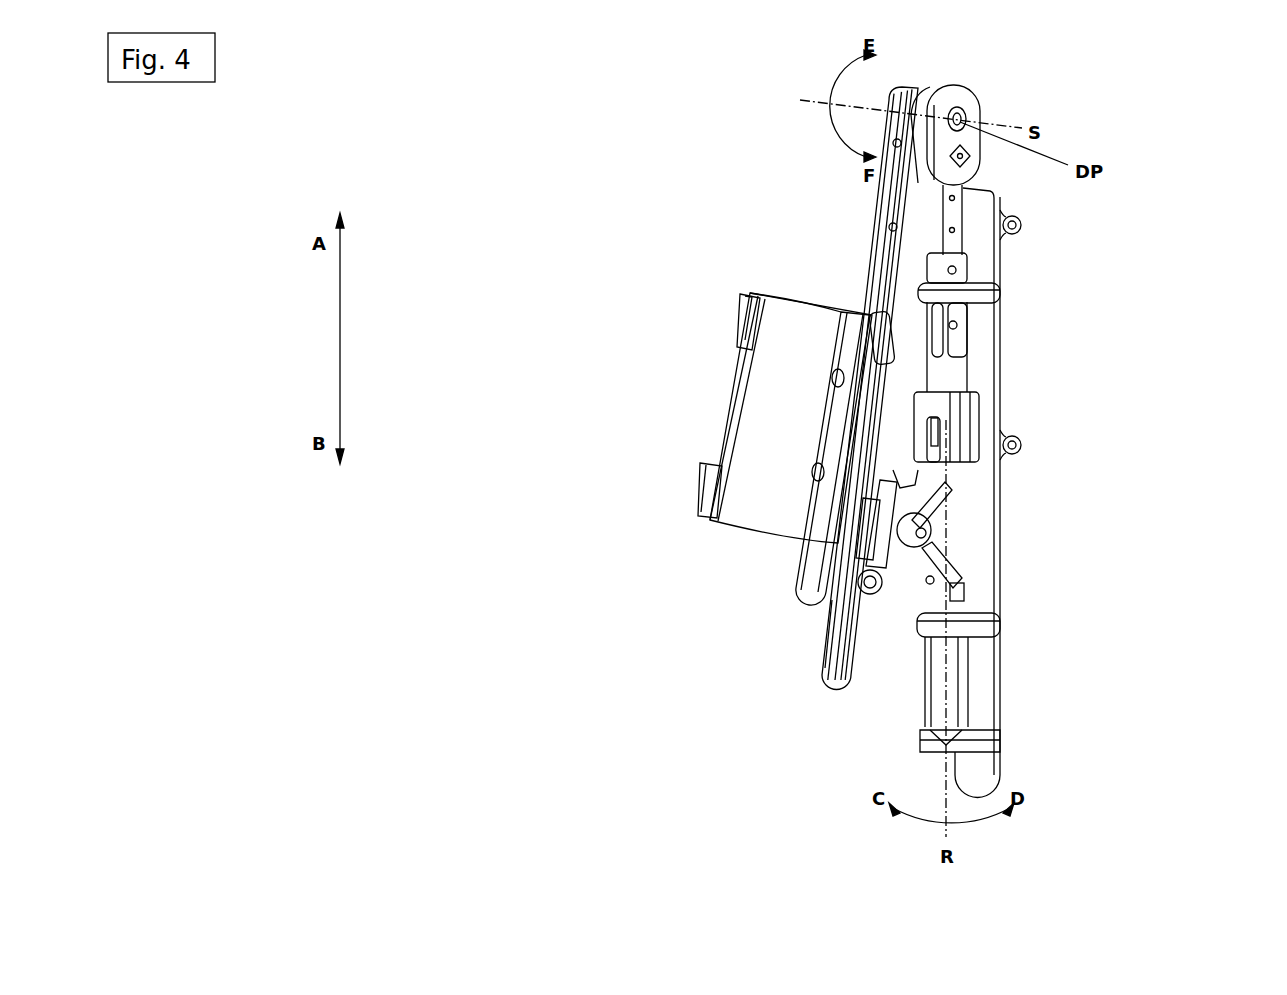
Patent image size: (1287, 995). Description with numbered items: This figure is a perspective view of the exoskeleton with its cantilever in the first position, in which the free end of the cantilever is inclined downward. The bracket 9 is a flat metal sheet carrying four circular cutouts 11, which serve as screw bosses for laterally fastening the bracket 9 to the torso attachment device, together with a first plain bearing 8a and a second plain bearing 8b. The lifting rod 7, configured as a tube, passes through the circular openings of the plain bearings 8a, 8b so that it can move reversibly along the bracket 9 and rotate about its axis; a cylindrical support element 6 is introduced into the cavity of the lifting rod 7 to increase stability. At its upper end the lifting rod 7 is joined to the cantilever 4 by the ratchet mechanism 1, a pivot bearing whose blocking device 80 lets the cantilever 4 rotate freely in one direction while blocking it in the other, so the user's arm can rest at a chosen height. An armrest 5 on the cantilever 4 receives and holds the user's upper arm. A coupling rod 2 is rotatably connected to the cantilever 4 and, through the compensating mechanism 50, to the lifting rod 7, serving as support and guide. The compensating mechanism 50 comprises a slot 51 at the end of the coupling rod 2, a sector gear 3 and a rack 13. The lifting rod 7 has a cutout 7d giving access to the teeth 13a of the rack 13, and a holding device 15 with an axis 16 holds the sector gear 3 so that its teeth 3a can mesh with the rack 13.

The ratchet mechanism 1 is at (978, 100).
The coupling rod 2 is at (822, 648).
The sector gear 3 is at (1000, 508).
The teeth 3a is at (840, 485).
The cantilever 4 is at (893, 197).
The armrest 5 is at (773, 393).
The support element 6 is at (985, 732).
The lifting rod 7 is at (1000, 565).
The cutout 7d is at (940, 433).
The first plain bearing 8a is at (1000, 630).
The second plain bearing 8b is at (1000, 287).
The bracket 9 is at (1000, 375).
The circular cutouts 11 is at (1021, 225).
The rack 13 is at (935, 455).
The teeth 13a is at (1000, 471).
The holding device 15 is at (945, 528).
The axis 16 is at (920, 540).
The compensating mechanism 50 is at (1013, 598).
The slot 51 is at (840, 660).
The blocking device 80 is at (965, 162).